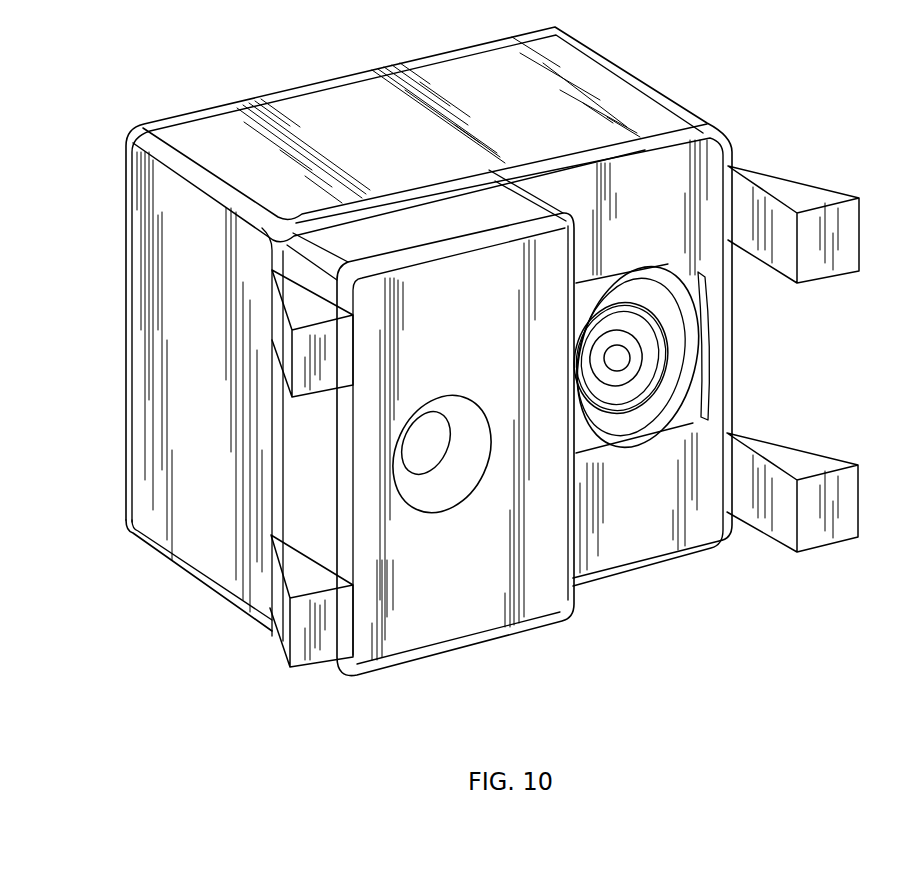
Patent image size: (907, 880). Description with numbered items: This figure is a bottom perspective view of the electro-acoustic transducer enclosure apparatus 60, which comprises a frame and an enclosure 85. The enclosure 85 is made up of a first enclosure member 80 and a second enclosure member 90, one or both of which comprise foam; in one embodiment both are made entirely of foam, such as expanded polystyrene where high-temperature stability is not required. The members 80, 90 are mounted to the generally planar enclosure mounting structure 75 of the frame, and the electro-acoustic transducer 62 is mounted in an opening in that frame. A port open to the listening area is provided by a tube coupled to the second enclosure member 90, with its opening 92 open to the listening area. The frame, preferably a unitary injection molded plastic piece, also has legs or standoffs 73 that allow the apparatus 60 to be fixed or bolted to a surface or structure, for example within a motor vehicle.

The electro-acoustic transducer enclosure apparatus 60 is at (107, 538).
The electro-acoustic transducer 62 is at (713, 343).
The legs or standoffs 73 is at (297, 650).
The enclosure mounting structure 75 is at (648, 540).
The first enclosure member 80 is at (130, 313).
The enclosure 85 is at (194, 613).
The second enclosure member 90 is at (465, 635).
The opening 92 is at (452, 408).